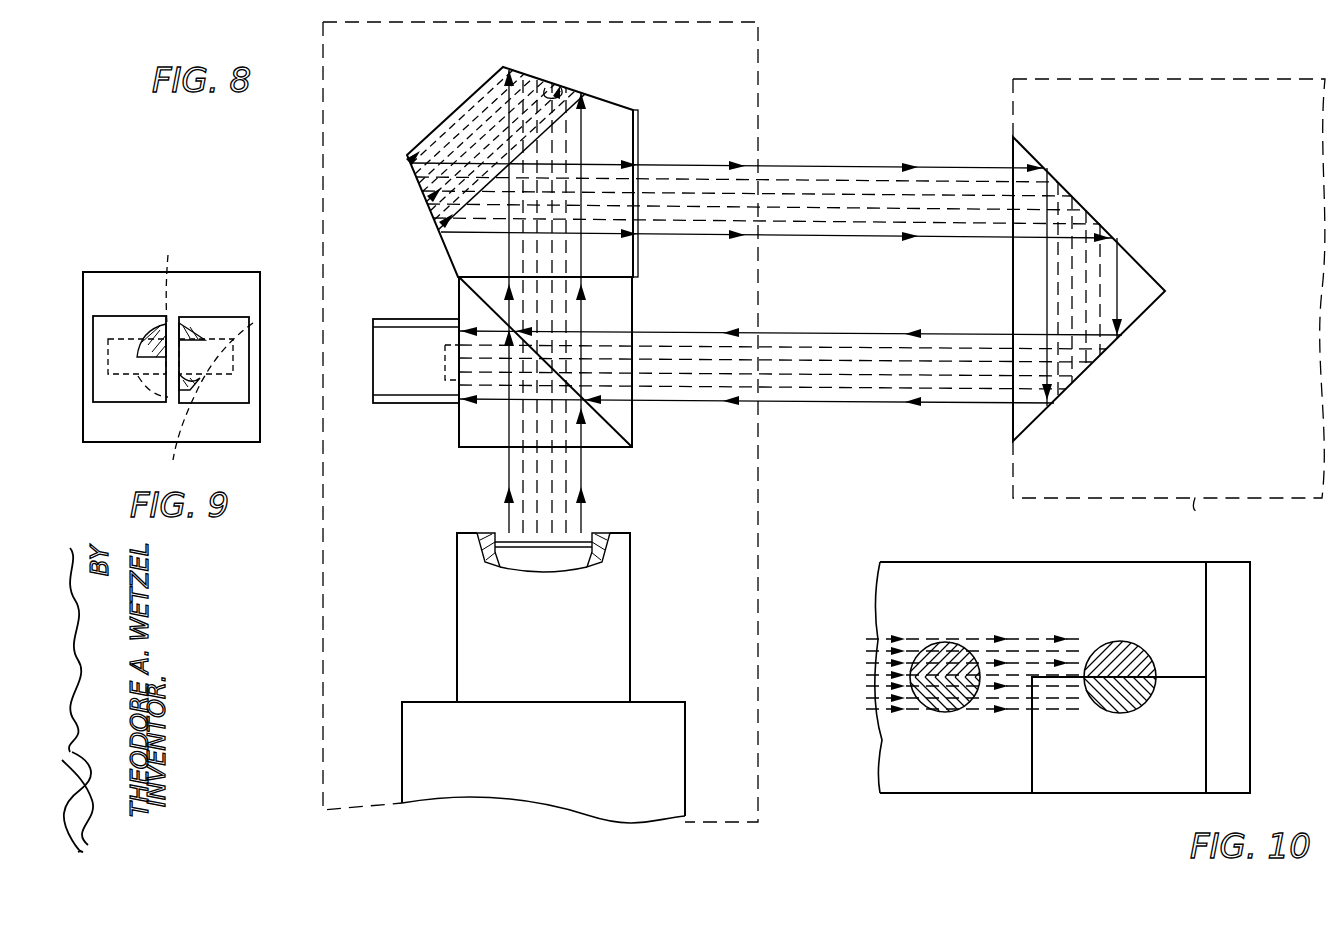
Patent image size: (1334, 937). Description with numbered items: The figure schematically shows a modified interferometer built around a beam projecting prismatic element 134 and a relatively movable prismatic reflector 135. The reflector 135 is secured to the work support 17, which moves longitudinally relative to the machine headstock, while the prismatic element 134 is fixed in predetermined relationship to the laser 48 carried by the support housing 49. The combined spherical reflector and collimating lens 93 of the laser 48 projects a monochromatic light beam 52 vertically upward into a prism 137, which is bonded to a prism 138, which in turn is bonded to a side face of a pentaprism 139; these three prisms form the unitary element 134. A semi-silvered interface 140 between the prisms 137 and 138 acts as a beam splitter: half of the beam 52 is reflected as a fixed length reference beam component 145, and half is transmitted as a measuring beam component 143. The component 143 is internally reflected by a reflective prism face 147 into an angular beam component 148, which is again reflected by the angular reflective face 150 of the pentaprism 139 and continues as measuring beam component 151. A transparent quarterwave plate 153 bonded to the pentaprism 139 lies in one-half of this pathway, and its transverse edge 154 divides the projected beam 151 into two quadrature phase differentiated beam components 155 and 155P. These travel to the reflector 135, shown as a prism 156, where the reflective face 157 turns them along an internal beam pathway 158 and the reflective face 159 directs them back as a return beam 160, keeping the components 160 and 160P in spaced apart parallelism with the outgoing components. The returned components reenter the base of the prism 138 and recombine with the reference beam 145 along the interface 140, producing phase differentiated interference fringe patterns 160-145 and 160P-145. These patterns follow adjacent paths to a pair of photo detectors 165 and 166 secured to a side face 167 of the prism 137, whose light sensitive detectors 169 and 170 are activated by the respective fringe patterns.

In FIG. 8, the pentaprism 139 is at (612, 123).
In FIG. 10, the pentaprism 139 is at (1058, 587).
In FIG. 8, the beam component 148 is at (478, 118).
In FIG. 8, the reflective prism face 147 is at (563, 98).
In FIG. 8, the angular reflective face 150 is at (440, 180).
In FIG. 8, the quarterwave plate 153 is at (640, 150).
In FIG. 10, the quarterwave plate 153 is at (1072, 775).
In FIG. 8, the measuring beam component 151 is at (594, 175).
In FIG. 8, the measuring beam component 143 is at (527, 243).
In FIG. 10, the measuring beam component 143 is at (1022, 703).
In FIG. 8, the beam component 155 is at (812, 178).
In FIG. 10, the beam component 155 is at (1140, 640).
In FIG. 8, the beam projecting prismatic element 134 is at (636, 326).
In FIG. 8, the prism 138 is at (612, 302).
In FIG. 8, the prism 137 is at (480, 428).
In FIG. 8, the semi-silvered interface 140 is at (627, 434).
In FIG. 8, the fixed length beam component 145 is at (466, 321).
In FIG. 8, the side face 167 is at (457, 429).
In FIG. 9, the side face 167 is at (97, 430).
In FIG. 8, the photo detector 165 is at (404, 383).
In FIG. 9, the photo detector 165 is at (93, 326).
In FIG. 8, the light sensitive detector 169 is at (445, 365).
In FIG. 9, the light sensitive detector 169 is at (108, 362).
In FIG. 8, the combined spherical reflector and collimating lens 93 is at (580, 542).
In FIG. 8, the light beam 52 is at (555, 470).
In FIG. 8, the laser 48 is at (483, 585).
In FIG. 8, the support housing 49 is at (420, 713).
In FIG. 8, the prismatic reflector 135 is at (1011, 291).
In FIG. 8, the reflective face 157 is at (1135, 270).
In FIG. 8, the prism 156 is at (1140, 305).
In FIG. 8, the internal beam pathway 158 is at (1081, 322).
In FIG. 8, the reflective face 159 is at (1031, 414).
In FIG. 8, the work support 17 is at (1202, 515).
In FIG. 9, the photo detector 166 is at (237, 393).
In FIG. 9, the light sensitive detector 170 is at (255, 321).
In FIG. 9, the interference fringe pattern 160-145 is at (194, 317).
In FIG. 9, the interference fringe pattern 160P-145 is at (223, 399).
In FIG. 10, the transverse edge 154 is at (1187, 675).
In FIG. 10, the return beam 160 is at (948, 640).
In FIG. 10, the phase differentiated beam component 160P is at (945, 712).
In FIG. 10, the beam component 155P is at (1130, 713).